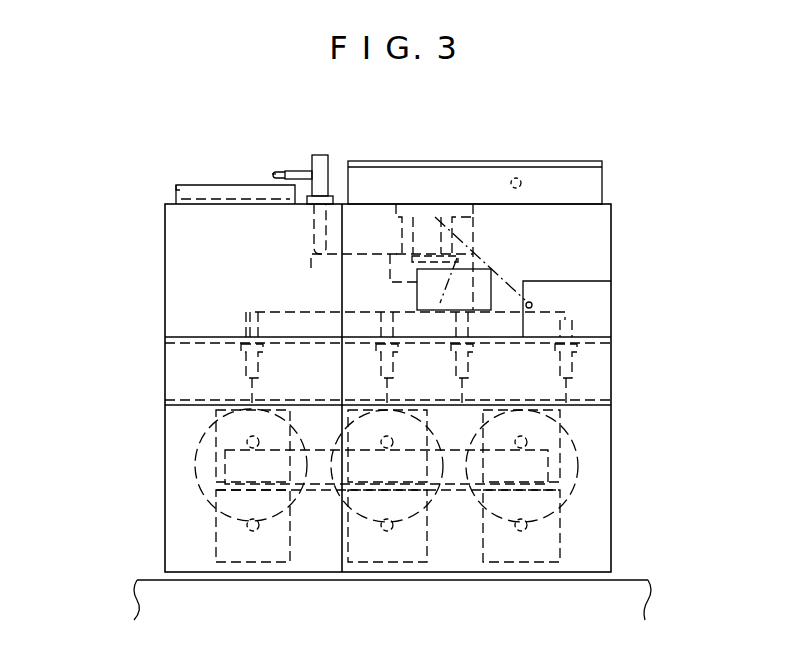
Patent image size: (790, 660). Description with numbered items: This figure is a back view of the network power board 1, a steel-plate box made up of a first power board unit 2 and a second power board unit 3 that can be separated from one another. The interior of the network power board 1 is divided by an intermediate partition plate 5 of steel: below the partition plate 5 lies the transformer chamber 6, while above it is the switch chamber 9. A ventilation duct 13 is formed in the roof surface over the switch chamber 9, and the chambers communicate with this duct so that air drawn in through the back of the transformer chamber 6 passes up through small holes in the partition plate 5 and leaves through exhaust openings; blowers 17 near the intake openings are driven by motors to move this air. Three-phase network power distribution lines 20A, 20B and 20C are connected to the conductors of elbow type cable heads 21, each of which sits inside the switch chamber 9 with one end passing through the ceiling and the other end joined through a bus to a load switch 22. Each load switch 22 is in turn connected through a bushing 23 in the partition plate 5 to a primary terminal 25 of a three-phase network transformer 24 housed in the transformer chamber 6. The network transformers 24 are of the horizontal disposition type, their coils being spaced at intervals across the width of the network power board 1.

The network power board 1 is at (160, 277).
The first power board unit 2 is at (308, 556).
The second power board unit 3 is at (464, 556).
The intermediate partition plate 5 is at (585, 337).
The transformer chamber 6 is at (590, 442).
The switch chamber 9 is at (590, 251).
The ventilation duct 13 is at (493, 163).
The blowers 17 is at (550, 540).
The three-phase network power distribution line 20A is at (300, 304).
The three-phase network power distribution line 20B is at (404, 318).
The three-phase network power distribution line 20C is at (470, 385).
The elbow type cable head 21 is at (312, 167).
The load switch 22 is at (456, 227).
The bushing 23 is at (575, 362).
The three-phase network transformer 24 is at (572, 471).
The primary terminal 25 is at (565, 390).